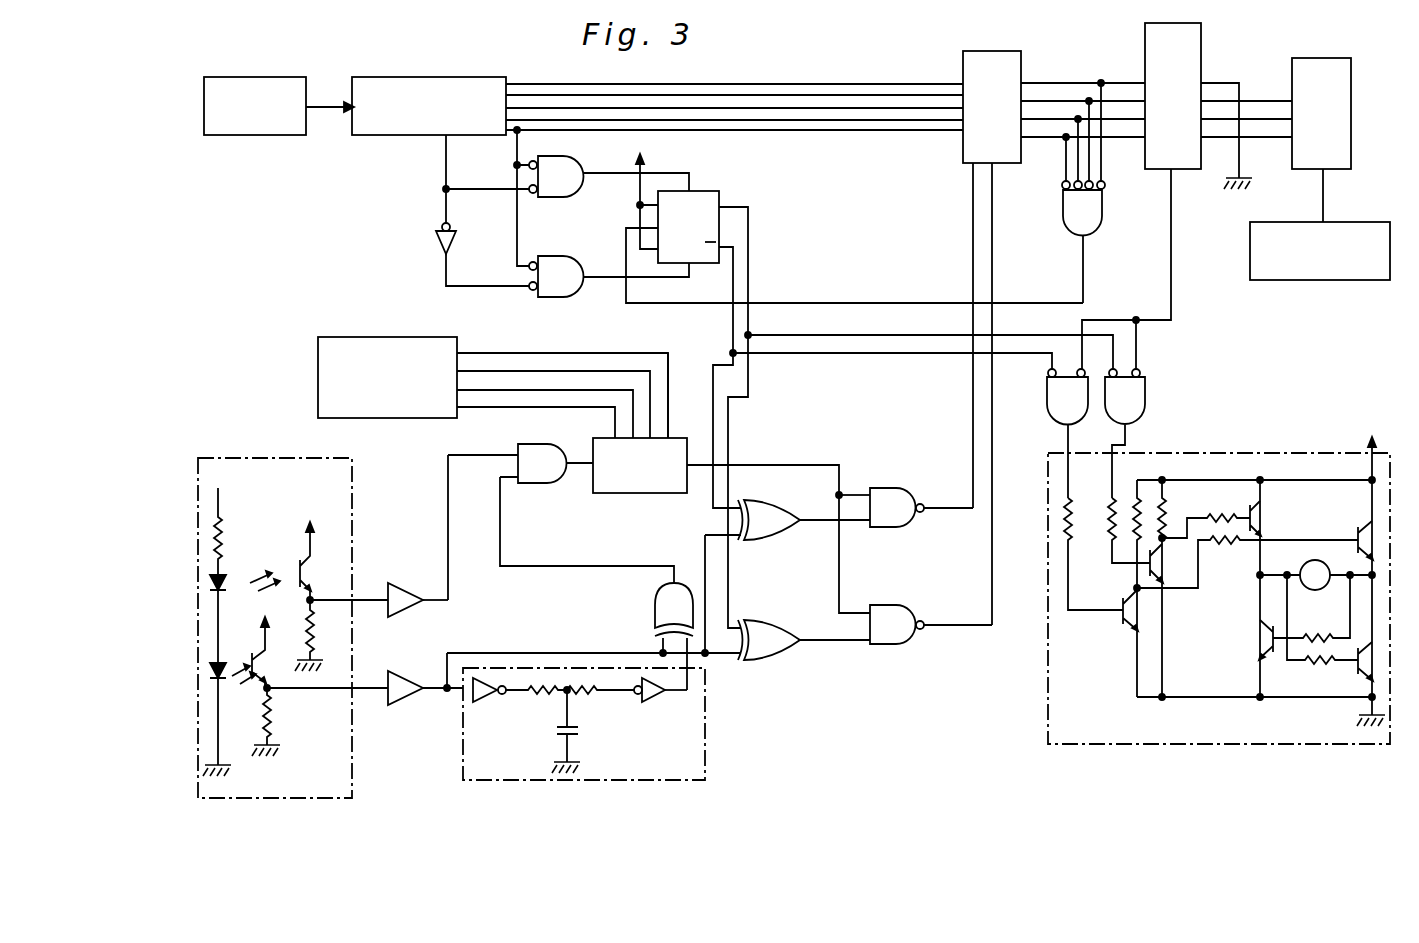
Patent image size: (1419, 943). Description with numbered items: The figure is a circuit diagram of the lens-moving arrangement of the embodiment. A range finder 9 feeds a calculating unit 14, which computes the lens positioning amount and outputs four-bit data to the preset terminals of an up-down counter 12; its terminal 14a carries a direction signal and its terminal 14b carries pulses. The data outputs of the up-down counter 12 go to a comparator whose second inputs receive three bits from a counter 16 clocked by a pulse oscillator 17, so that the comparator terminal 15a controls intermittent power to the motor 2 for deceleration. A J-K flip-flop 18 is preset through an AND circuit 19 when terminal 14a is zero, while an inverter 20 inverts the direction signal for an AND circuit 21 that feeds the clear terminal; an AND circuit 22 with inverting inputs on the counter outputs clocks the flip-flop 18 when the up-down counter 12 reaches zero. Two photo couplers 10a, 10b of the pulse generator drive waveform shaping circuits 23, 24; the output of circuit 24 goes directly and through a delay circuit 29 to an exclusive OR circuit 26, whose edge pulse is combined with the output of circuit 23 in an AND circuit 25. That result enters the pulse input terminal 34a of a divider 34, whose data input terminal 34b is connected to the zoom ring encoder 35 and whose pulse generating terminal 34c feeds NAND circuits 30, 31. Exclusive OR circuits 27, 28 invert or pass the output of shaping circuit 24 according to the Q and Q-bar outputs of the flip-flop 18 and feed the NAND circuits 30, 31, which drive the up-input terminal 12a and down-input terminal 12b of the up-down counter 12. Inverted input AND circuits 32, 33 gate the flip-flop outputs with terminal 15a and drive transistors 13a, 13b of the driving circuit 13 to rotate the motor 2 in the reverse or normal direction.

The motor 2 is at (1313, 590).
The range finder 9 is at (262, 136).
The photo coupler 10a is at (258, 556).
The photo coupler 10b is at (237, 690).
The up-down counter 12 is at (1000, 51).
The up-input terminal 12a is at (997, 164).
The down-input terminal 12b is at (964, 164).
The driving circuit 13 is at (1288, 452).
The transistor 13a is at (1162, 560).
The transistor 13b is at (1132, 627).
The calculating unit 14 is at (449, 77).
The terminal 14a is at (440, 138).
The terminal 14b is at (506, 138).
The terminal of the comparator 15a is at (1175, 172).
The counter 16 is at (1335, 112).
The pulse oscillator 17 is at (1342, 280).
The J-K flip-flop 18 is at (700, 191).
The AND circuit 19 is at (570, 185).
The inverter 20 is at (434, 238).
The AND circuit 21 is at (573, 297).
The AND circuit 22 is at (1095, 212).
The waveform shaping circuit 23 is at (424, 574).
The waveform shaping circuit 24 is at (410, 698).
The AND circuit 25 is at (538, 452).
The exclusive OR circuit 26 is at (655, 613).
The exclusive OR circuit 27 is at (773, 628).
The exclusive OR circuit 28 is at (776, 513).
The delay circuit 29 is at (705, 728).
The NAND circuit 30 is at (893, 613).
The NAND circuit 31 is at (893, 497).
The inverted input AND circuit 32 is at (1133, 398).
The inverted input AND circuit 33 is at (1053, 393).
The divider 34 is at (640, 484).
The pulse input terminal 34a is at (590, 468).
The data input terminal 34b is at (672, 435).
The pulse generating terminal 34c is at (688, 468).
The zoom ring encoder 35 is at (318, 392).